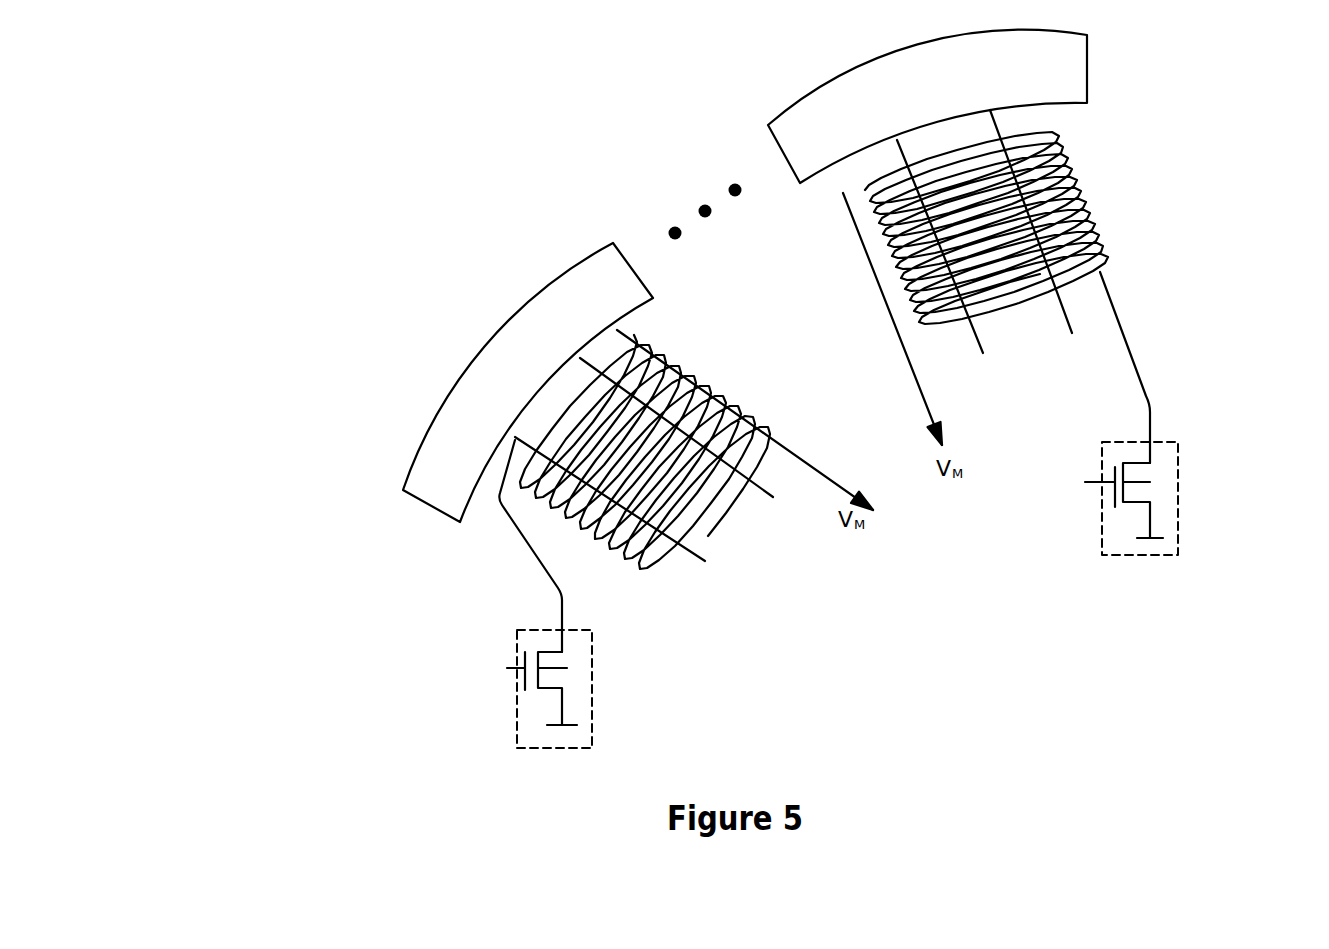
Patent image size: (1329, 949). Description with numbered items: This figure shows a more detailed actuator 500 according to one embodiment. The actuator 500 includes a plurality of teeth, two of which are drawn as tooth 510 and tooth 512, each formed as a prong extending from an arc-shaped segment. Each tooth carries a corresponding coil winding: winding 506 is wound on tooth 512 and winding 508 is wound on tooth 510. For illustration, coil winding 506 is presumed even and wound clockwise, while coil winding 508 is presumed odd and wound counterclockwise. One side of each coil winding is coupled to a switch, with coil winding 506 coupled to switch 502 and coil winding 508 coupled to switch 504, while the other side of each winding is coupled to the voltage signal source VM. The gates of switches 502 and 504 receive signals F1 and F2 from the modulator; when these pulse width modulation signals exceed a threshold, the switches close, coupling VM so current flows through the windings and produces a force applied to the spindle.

The actuator 500 is at (160, 63).
The switch 502 is at (1178, 500).
The switch 504 is at (553, 750).
The coil winding 506 is at (1088, 182).
The coil winding 508 is at (602, 572).
The tooth 510 is at (547, 401).
The tooth 512 is at (960, 109).